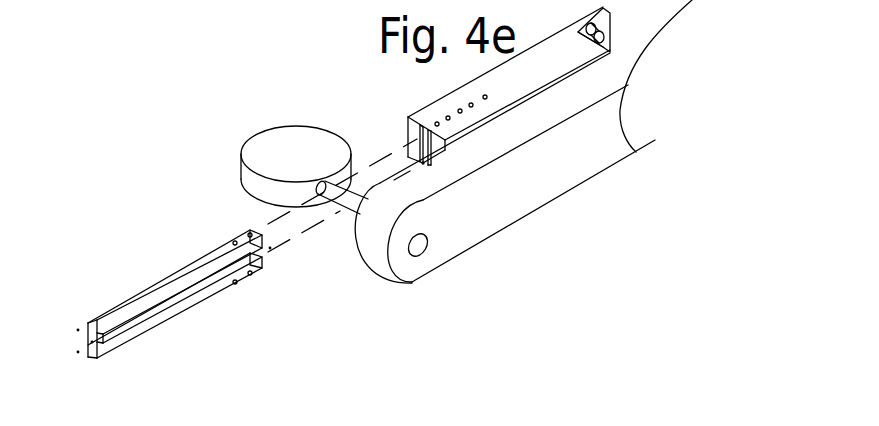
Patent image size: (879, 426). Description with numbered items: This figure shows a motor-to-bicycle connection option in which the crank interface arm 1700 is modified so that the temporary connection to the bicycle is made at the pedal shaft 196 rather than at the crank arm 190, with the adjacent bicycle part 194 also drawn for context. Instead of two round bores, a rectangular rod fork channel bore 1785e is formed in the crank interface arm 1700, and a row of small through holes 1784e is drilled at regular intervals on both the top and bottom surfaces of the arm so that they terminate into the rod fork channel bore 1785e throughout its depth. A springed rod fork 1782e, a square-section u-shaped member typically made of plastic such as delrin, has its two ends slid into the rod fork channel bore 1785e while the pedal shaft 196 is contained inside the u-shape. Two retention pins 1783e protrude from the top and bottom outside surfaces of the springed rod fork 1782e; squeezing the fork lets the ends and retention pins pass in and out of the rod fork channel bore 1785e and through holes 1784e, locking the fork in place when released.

The crank arm 190 is at (523, 141).
The disk 194 is at (296, 166).
The pedal shaft 196 is at (350, 214).
The crank interface arm 1700 is at (509, 85).
The springed rod fork 1782e is at (120, 303).
The retention pins 1783e is at (238, 241).
The through holes 1784e is at (446, 118).
The rod fork channel bore 1785e is at (408, 122).